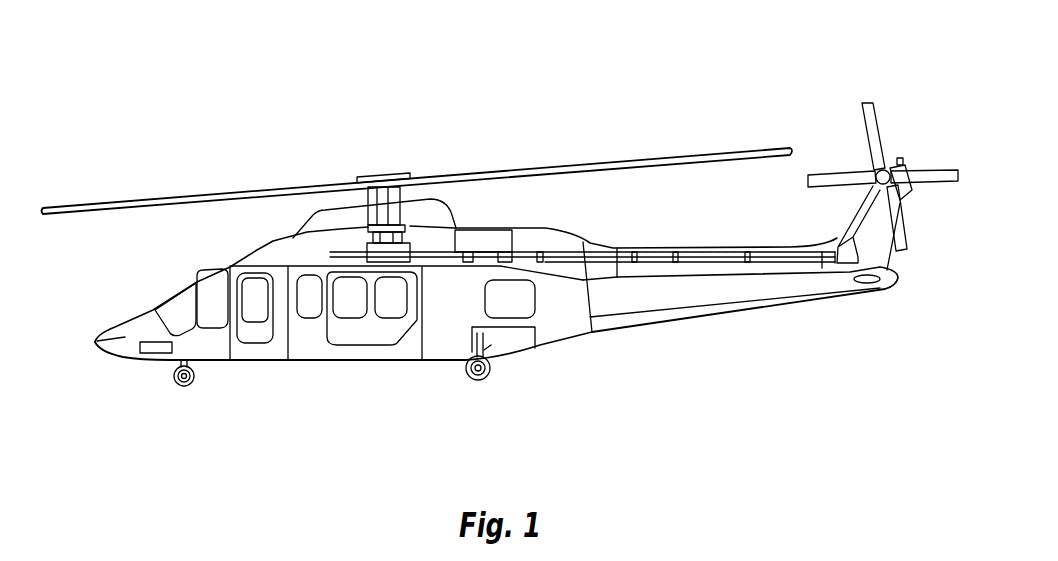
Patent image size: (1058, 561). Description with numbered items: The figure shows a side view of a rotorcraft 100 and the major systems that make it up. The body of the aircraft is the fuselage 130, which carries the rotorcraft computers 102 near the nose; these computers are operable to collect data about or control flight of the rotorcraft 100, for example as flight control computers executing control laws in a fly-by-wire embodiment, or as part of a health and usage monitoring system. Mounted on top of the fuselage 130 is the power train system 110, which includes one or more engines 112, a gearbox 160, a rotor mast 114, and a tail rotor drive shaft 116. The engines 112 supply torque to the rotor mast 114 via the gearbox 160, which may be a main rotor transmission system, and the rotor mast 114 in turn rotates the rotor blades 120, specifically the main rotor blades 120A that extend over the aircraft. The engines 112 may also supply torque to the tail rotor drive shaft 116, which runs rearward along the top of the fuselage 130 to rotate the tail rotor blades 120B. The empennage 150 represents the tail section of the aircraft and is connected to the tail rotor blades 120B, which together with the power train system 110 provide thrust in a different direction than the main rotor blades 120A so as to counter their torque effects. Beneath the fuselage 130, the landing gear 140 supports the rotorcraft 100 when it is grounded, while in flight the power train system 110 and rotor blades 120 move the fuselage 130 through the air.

The rotorcraft 100 is at (242, 58).
The power train system 110 is at (378, 157).
The engines 112 is at (490, 232).
The rotor mast 114 is at (380, 197).
The tail rotor drive shaft 116 is at (653, 252).
The rotor blades 120 is at (657, 62).
The main rotor blades 120A is at (672, 155).
The tail rotor blades 120B is at (823, 168).
The fuselage 130 is at (558, 340).
The landing gear 140 is at (483, 381).
The empennage 150 is at (720, 312).
The gearbox 160 is at (367, 254).
The rotorcraft computers 102 is at (157, 354).